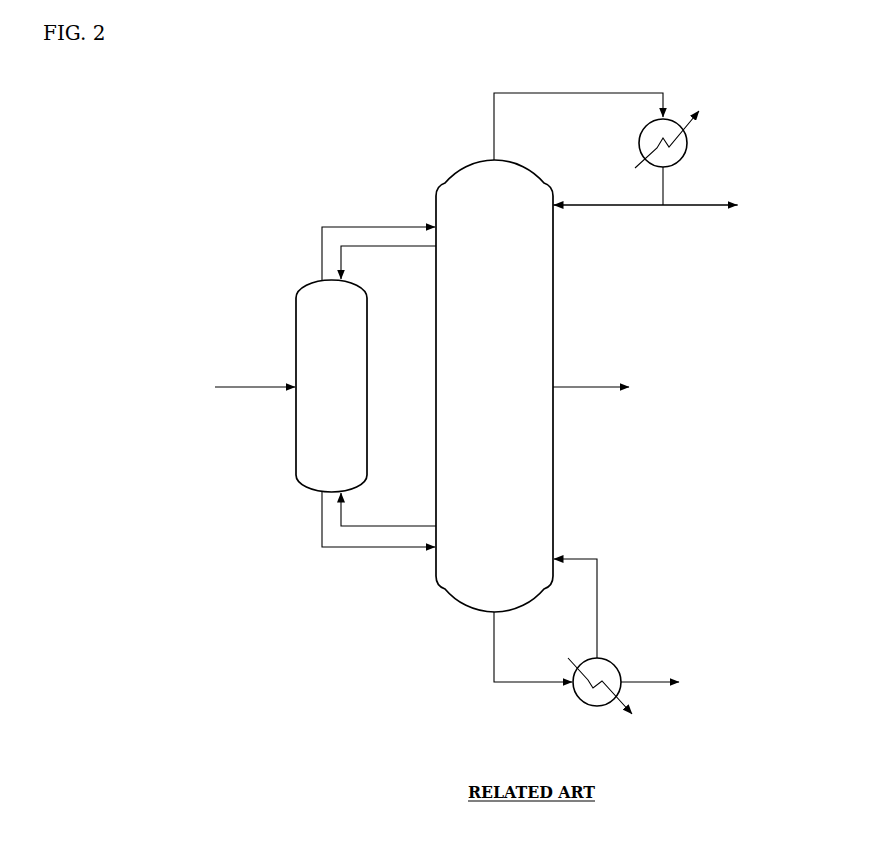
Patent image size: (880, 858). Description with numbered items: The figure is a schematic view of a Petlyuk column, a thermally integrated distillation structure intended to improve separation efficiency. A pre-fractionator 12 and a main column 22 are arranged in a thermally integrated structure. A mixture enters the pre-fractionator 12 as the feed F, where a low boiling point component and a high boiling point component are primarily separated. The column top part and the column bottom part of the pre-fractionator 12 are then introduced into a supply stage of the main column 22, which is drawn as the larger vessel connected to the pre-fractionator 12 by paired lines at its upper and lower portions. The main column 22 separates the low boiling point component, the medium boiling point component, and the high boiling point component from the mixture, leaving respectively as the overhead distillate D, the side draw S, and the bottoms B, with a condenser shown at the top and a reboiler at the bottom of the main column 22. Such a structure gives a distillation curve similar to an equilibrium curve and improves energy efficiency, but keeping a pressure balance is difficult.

The pre-fractionator 12 is at (297, 340).
The main column 22 is at (550, 322).
The feed stream F is at (246, 387).
The side draw stream S is at (603, 387).
The distillate stream D is at (660, 207).
The bottoms stream B is at (665, 682).